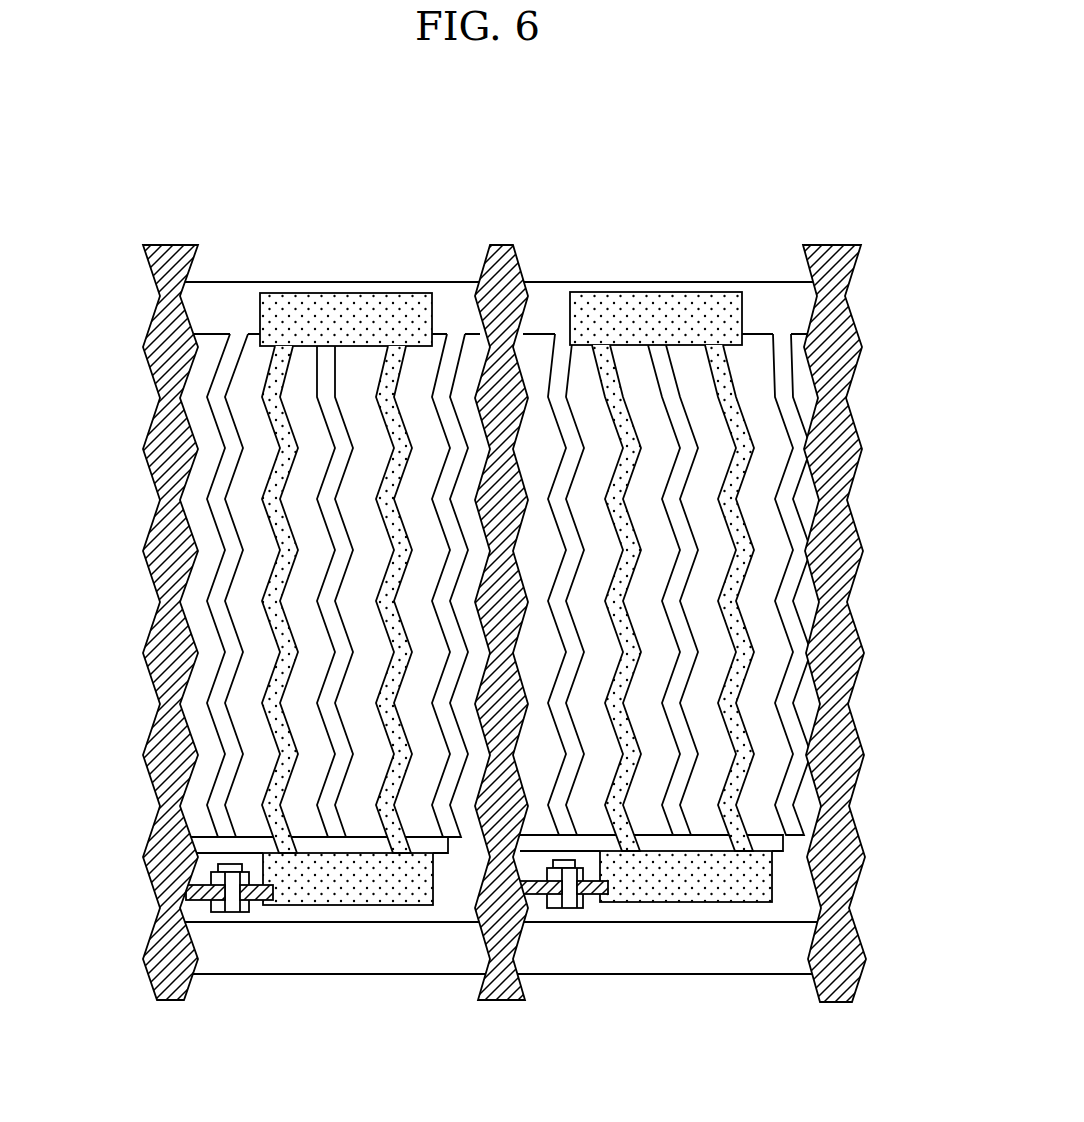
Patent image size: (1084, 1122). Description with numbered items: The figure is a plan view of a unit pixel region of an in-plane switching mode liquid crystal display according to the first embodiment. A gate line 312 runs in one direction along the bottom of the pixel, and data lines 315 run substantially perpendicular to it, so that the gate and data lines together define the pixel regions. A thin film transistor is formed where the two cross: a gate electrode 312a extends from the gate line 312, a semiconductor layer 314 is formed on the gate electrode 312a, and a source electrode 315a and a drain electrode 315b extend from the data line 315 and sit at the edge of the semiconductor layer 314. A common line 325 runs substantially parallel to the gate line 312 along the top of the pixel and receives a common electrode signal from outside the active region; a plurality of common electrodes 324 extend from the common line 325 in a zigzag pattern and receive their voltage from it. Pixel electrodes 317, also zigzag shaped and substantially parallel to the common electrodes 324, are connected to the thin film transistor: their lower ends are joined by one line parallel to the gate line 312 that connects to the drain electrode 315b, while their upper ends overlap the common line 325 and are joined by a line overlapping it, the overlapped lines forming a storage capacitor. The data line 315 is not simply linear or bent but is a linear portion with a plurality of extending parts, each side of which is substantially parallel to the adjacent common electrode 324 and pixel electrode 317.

The gate line 312 is at (402, 958).
The gate electrode 312a is at (211, 876).
The semiconductor layer 314 is at (233, 914).
The data line 315 is at (168, 927).
The source electrode 315a is at (225, 914).
The drain electrode 315b is at (255, 901).
The pixel electrode 317 is at (740, 570).
The common electrode 324 is at (793, 502).
The common line 325 is at (768, 294).